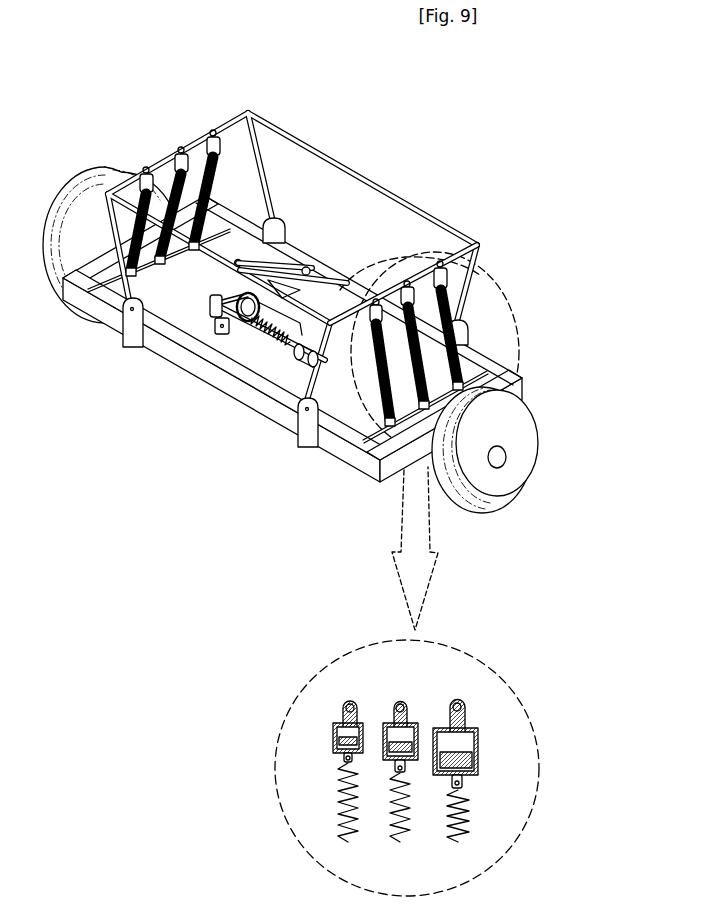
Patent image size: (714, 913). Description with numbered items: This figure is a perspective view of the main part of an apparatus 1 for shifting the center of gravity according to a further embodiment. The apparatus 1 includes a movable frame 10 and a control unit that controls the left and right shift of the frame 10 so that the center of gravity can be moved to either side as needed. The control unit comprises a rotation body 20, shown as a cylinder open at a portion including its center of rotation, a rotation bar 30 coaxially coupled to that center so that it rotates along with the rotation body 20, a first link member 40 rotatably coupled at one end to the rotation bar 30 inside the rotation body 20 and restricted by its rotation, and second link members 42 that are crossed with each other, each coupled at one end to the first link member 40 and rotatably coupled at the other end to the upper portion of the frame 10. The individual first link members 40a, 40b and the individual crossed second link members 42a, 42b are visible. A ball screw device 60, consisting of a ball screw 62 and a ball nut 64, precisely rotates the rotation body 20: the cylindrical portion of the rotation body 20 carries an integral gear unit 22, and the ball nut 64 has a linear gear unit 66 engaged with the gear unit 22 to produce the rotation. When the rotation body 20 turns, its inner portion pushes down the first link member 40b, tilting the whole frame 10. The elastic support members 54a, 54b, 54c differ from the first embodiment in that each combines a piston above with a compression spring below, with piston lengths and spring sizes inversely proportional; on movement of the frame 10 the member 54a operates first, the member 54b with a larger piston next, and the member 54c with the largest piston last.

The apparatus for shifting the center of gravity 1 is at (289, 60).
The frame 10 is at (413, 199).
The rotation body 20 is at (308, 288).
The gear unit 22 is at (216, 296).
The rotation bar 30 is at (338, 290).
The first link member 40 is at (152, 451).
The first link member 40a is at (224, 272).
The first link member 40b is at (248, 322).
The second link member 42 is at (383, 92).
The second link member 42a is at (270, 277).
The second link member 42b is at (360, 286).
The elastic support member 54a is at (145, 175).
The elastic support member 54b is at (179, 158).
The elastic support member 54c is at (211, 140).
The ball screw device 60 is at (500, 306).
The ball screw 62 is at (296, 342).
The ball nut 64 is at (262, 322).
The linear gear unit 66 is at (380, 292).